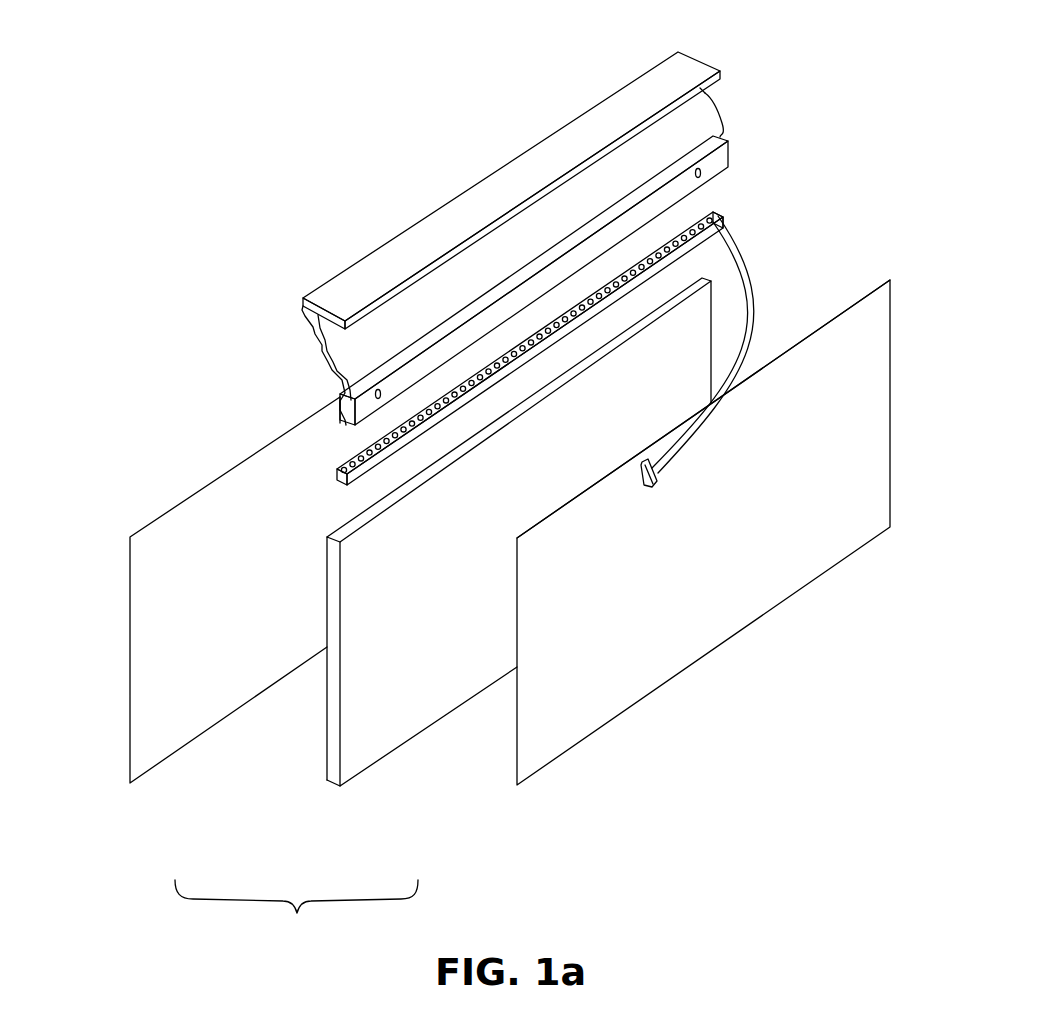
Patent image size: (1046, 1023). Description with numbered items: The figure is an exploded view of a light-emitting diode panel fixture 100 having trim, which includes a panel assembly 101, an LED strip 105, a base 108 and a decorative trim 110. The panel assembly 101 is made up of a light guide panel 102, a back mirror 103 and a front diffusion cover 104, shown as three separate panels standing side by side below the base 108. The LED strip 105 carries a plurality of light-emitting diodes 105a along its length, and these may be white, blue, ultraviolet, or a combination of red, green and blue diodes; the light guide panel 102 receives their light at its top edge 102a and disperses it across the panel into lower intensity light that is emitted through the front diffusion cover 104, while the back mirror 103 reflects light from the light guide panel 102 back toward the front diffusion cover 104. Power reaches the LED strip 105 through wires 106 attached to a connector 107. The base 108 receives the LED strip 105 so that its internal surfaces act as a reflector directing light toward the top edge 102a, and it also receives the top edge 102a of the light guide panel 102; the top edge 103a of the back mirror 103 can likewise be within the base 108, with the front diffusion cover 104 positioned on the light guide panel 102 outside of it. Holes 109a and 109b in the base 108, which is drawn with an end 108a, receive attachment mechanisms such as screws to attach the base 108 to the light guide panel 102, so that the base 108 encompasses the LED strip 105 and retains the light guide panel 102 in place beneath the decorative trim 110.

The light-emitting diode panel fixture 100 is at (198, 204).
The panel assembly 101 is at (296, 910).
The light guide panel 102 is at (373, 742).
The top edge of the light guide panel 102a is at (352, 522).
The back mirror 103 is at (533, 720).
The top edge of the back mirror 103a is at (869, 289).
The front diffusion cover 104 is at (158, 742).
The LED strip 105 is at (339, 466).
The light-emitting diodes 105a is at (715, 214).
The wires 106 is at (757, 312).
The connector 107 is at (660, 486).
The base 108 is at (718, 158).
The end of lower rail 108a is at (337, 400).
The hole 109a is at (378, 390).
The hole 109b is at (697, 169).
The decorative trim 110 is at (668, 80).